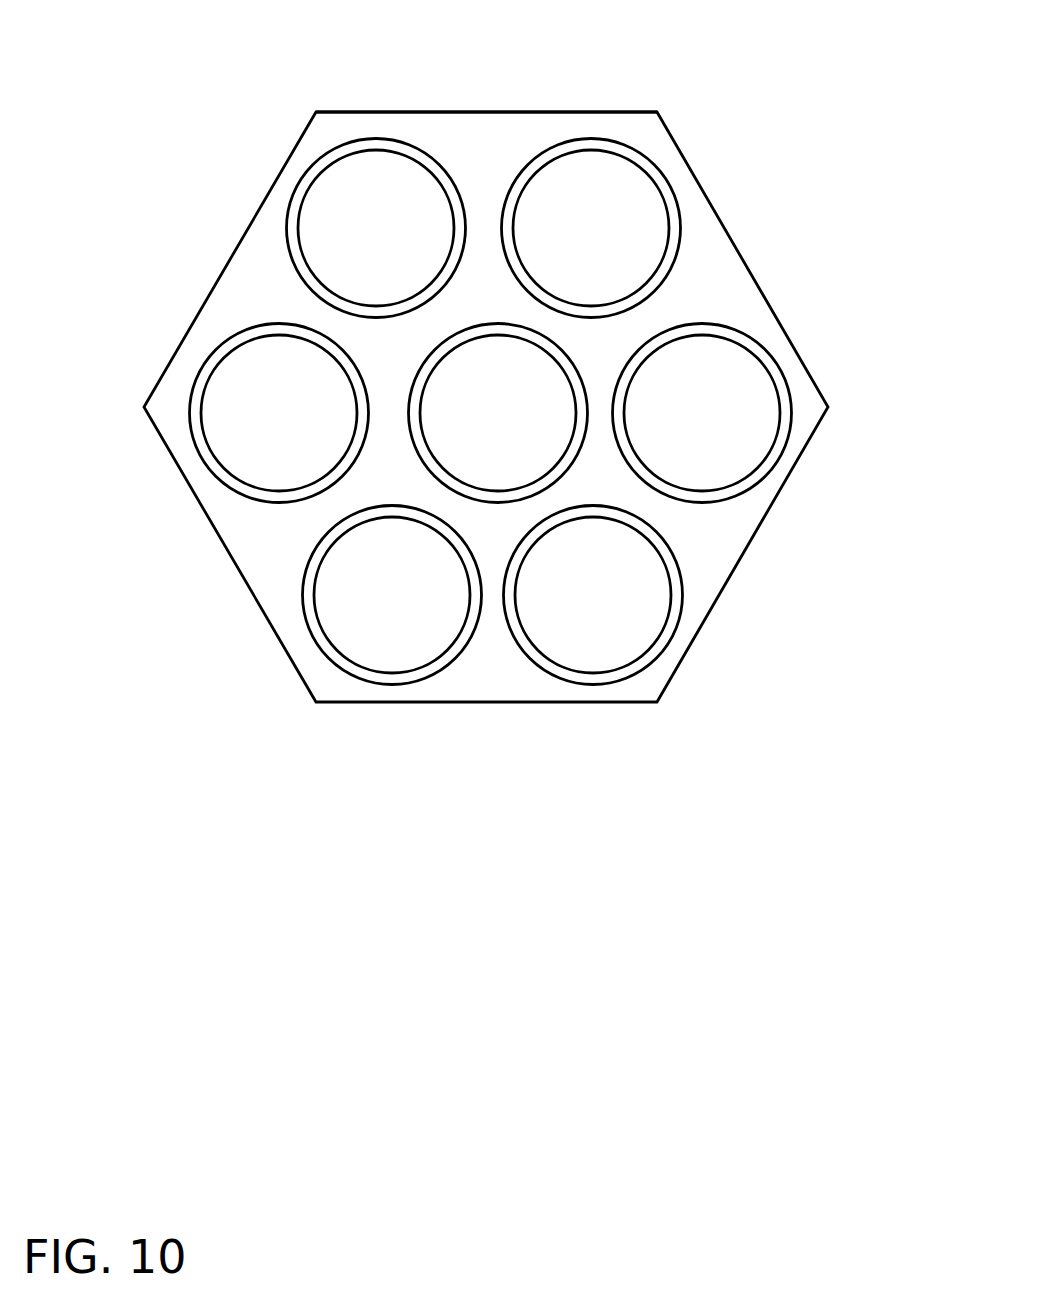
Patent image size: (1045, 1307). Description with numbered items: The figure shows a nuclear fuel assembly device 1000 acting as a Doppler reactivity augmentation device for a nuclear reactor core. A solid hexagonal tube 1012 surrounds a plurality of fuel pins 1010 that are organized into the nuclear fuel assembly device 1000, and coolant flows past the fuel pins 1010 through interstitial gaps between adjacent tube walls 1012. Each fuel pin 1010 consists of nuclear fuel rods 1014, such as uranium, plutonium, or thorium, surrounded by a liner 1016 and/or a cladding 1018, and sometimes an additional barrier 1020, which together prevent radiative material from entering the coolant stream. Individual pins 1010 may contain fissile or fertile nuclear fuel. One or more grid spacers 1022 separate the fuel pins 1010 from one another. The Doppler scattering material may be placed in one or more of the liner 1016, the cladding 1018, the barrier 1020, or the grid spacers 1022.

The nuclear fuel assembly device 1000 is at (496, 352).
The fuel pin 1010 is at (666, 142).
The hexagonal tube 1012 is at (497, 110).
The nuclear fuel rod 1014 is at (300, 212).
The liner 1016 is at (290, 250).
The cladding 1018 is at (300, 580).
The barrier 1020 is at (778, 458).
The grid spacer 1022 is at (486, 407).